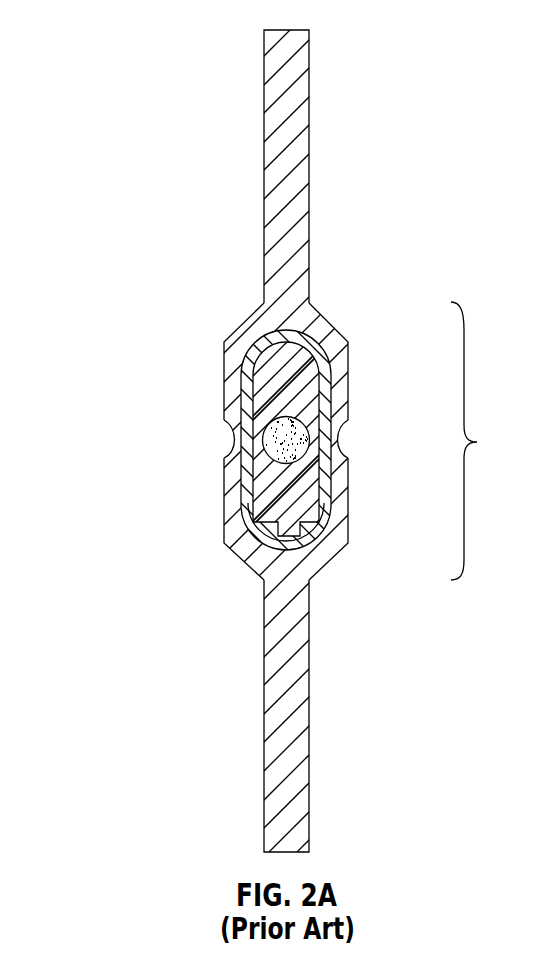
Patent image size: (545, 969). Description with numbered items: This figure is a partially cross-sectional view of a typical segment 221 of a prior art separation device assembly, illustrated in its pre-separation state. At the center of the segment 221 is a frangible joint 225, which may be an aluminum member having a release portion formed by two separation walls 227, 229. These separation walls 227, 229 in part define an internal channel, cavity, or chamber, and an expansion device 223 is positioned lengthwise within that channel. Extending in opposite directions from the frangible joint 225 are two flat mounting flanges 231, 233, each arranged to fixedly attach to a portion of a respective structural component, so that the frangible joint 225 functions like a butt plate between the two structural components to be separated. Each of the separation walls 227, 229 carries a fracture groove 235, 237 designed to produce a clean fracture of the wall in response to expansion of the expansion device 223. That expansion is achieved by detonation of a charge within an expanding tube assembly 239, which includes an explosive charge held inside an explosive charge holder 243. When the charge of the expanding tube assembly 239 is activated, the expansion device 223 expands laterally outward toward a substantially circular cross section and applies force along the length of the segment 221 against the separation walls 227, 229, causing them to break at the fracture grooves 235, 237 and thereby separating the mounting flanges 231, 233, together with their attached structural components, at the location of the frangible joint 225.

The segment 221 is at (198, 278).
The expansion device 223 is at (247, 486).
The frangible joint 225 is at (490, 441).
The separation wall 227 is at (223, 386).
The separation wall 229 is at (348, 420).
The mounting flange 231 is at (310, 160).
The mounting flange 233 is at (310, 746).
The fracture groove 235 is at (222, 442).
The fracture groove 237 is at (350, 442).
The expanding tube assembly 239 is at (347, 341).
The explosive charge holder 243 is at (316, 354).